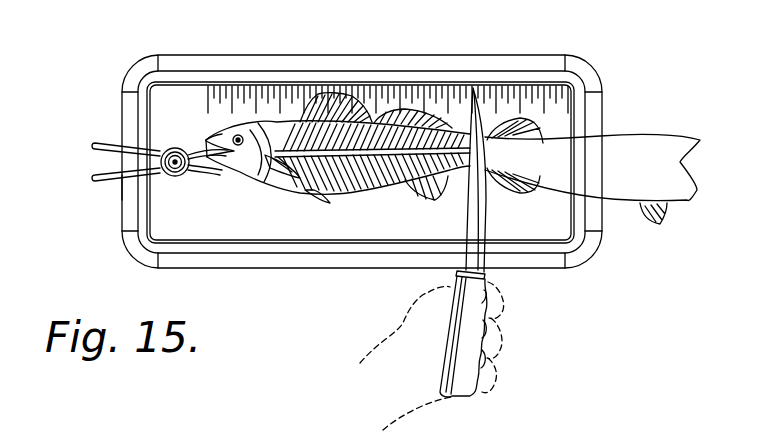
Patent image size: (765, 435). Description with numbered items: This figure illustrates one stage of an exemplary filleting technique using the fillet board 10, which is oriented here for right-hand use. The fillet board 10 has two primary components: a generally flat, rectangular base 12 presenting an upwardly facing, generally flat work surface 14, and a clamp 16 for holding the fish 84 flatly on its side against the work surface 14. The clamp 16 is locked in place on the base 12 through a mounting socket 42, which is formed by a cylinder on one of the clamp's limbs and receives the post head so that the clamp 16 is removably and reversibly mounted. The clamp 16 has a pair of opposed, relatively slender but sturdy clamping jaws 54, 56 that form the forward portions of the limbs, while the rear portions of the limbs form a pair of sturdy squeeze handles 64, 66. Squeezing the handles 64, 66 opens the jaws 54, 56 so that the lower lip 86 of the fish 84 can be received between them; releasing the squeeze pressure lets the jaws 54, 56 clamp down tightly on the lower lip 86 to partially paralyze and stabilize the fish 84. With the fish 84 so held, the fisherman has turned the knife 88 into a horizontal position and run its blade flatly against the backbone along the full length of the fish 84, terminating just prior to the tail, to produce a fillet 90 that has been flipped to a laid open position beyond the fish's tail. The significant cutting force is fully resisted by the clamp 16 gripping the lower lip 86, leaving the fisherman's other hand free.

The fillet board 10 is at (127, 51).
The base 12 is at (462, 46).
The work surface 14 is at (565, 219).
The clamp 16 is at (112, 187).
The socket 42 is at (164, 151).
The clamping jaw 54 is at (182, 148).
The clamping jaw 56 is at (198, 174).
The squeeze handle 64 is at (92, 146).
The squeeze handle 66 is at (92, 179).
The fish 84 is at (356, 192).
The lower lip 86 is at (210, 161).
The knife 88 is at (467, 240).
The fillet 90 is at (652, 153).